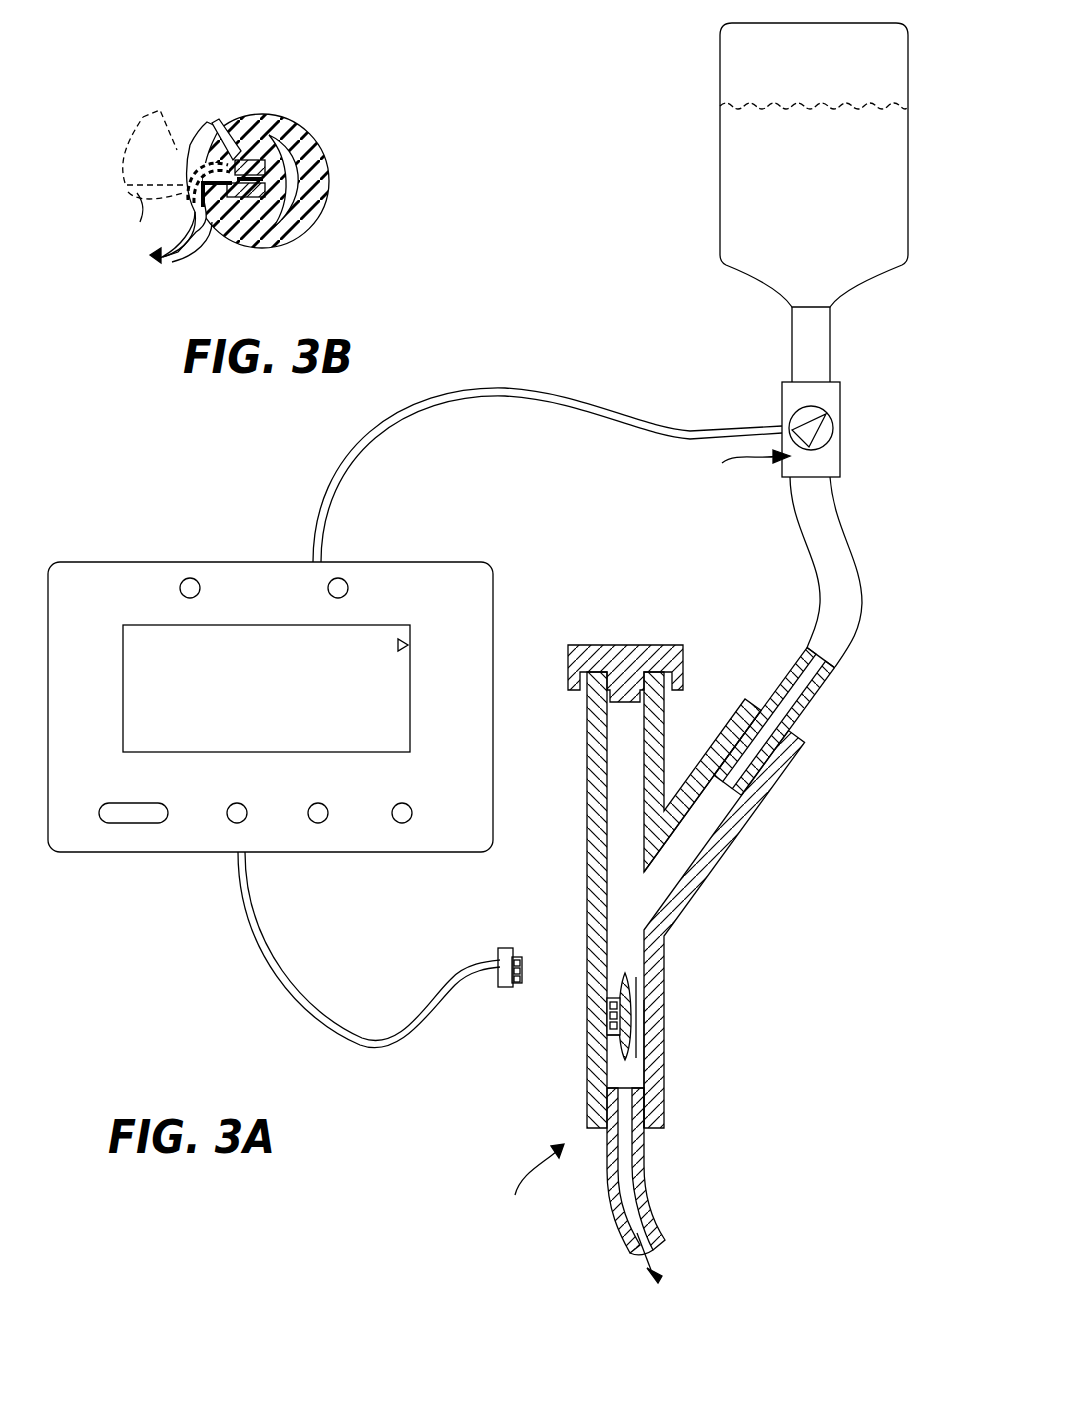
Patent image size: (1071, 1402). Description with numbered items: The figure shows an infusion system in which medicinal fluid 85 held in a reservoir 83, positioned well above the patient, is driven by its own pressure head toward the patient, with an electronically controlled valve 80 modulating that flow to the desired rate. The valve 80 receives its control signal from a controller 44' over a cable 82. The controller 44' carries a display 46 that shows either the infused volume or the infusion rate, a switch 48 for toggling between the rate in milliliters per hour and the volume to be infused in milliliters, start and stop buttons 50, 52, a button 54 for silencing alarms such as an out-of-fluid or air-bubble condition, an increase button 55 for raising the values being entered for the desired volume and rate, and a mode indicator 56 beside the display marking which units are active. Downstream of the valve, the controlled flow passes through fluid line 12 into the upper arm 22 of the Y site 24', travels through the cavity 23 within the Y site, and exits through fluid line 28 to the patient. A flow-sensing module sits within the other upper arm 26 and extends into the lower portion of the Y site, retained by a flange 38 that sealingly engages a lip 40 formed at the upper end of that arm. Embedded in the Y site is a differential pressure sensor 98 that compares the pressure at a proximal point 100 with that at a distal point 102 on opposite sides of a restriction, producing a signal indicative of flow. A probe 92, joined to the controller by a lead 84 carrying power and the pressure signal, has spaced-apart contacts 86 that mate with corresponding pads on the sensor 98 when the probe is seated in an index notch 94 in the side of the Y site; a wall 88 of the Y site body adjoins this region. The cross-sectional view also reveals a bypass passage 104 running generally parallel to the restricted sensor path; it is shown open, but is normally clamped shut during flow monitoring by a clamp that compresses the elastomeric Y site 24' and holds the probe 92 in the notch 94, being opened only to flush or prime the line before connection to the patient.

In FIG. 3A, the fluid line 12 is at (792, 345).
In FIG. 3A, the upper arm 22 is at (742, 826).
In FIG. 3A, the cavity 23 is at (663, 893).
In FIG. 3A, the Y site 24' is at (666, 1082).
In FIG. 3B, the upper arm 26 is at (330, 174).
In FIG. 3A, the fluid line 28 is at (646, 1165).
In FIG. 3A, the flange 38 is at (580, 690).
In FIG. 3A, the lip 40 is at (570, 678).
In FIG. 3A, the controller 44' is at (270, 703).
In FIG. 3A, the display 46 is at (274, 712).
In FIG. 3A, the switch 48 is at (135, 823).
In FIG. 3A, the start button 50 is at (243, 823).
In FIG. 3A, the stop button 52 is at (322, 823).
In FIG. 3A, the button for silencing alarms 54 is at (404, 823).
In FIG. 3A, the increase button 55 is at (183, 580).
In FIG. 3A, the mode indicator 56 is at (408, 643).
In FIG. 3A, the electronically controlled valve 80 is at (840, 397).
In FIG. 3A, the cable 82 is at (507, 388).
In FIG. 3A, the reservoir 83 is at (720, 256).
In FIG. 3B, the lead 84 is at (185, 262).
In FIG. 3A, the lead 84 is at (290, 1000).
In FIG. 3A, the medicinal fluid 85 is at (826, 211).
In FIG. 3B, the contacts 86 is at (125, 190).
In FIG. 3A, the contacts 86 is at (522, 965).
In FIG. 3A, the connector wall 88 is at (650, 1040).
In FIG. 3B, the probe 92 is at (207, 123).
In FIG. 3A, the probe 92 is at (501, 948).
In FIG. 3B, the index notch 94 is at (235, 228).
In FIG. 3B, the differential pressure sensor 98 is at (229, 142).
In FIG. 3A, the proximal point 100 is at (607, 1016).
In FIG. 3A, the distal point 102 is at (612, 1038).
In FIG. 3B, the bypass passage 104 is at (299, 146).
In FIG. 3A, the bypass passage 104 is at (638, 1020).